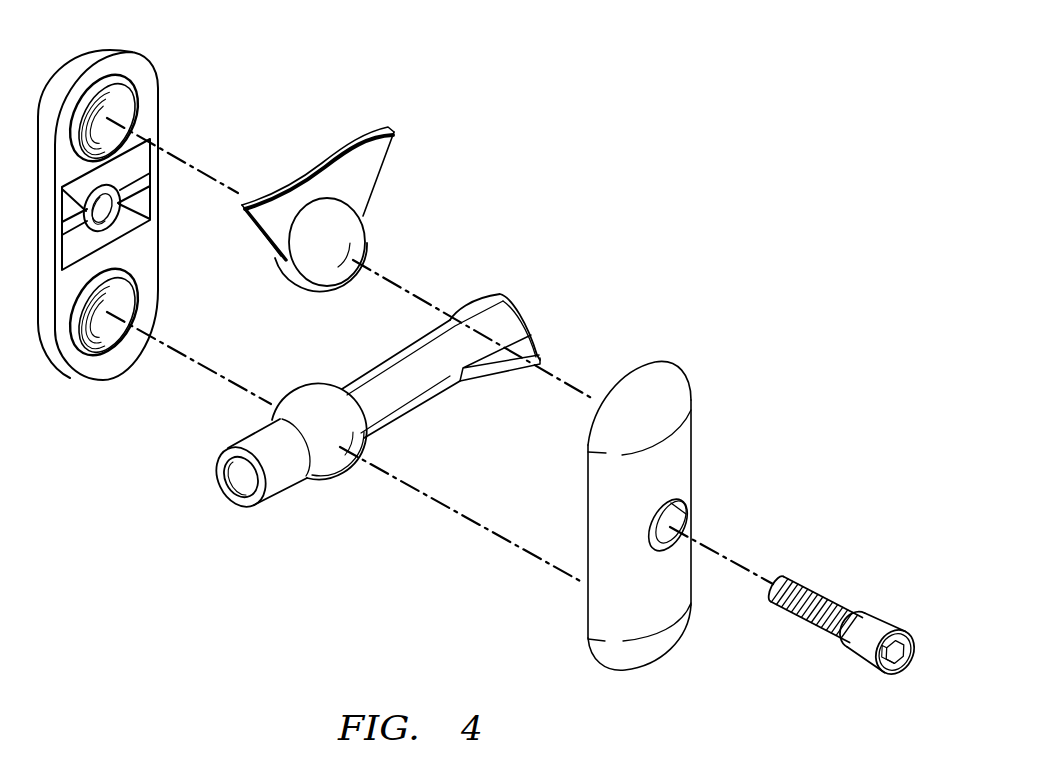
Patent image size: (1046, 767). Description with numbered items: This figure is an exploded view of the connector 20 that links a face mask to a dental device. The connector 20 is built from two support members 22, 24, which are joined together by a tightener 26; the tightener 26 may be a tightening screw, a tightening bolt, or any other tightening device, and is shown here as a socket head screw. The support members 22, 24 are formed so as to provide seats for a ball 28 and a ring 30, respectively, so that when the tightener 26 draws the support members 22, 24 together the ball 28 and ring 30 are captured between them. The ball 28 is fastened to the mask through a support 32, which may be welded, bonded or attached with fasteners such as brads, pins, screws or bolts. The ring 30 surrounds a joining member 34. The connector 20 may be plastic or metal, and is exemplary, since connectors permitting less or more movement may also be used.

The connector 20 is at (577, 104).
The support member 22 is at (655, 654).
The support member 24 is at (84, 64).
The tightener 26 is at (893, 619).
The ball 28 is at (340, 281).
The ring 30 is at (340, 474).
The support 32 is at (376, 161).
The joining member 34 is at (437, 397).